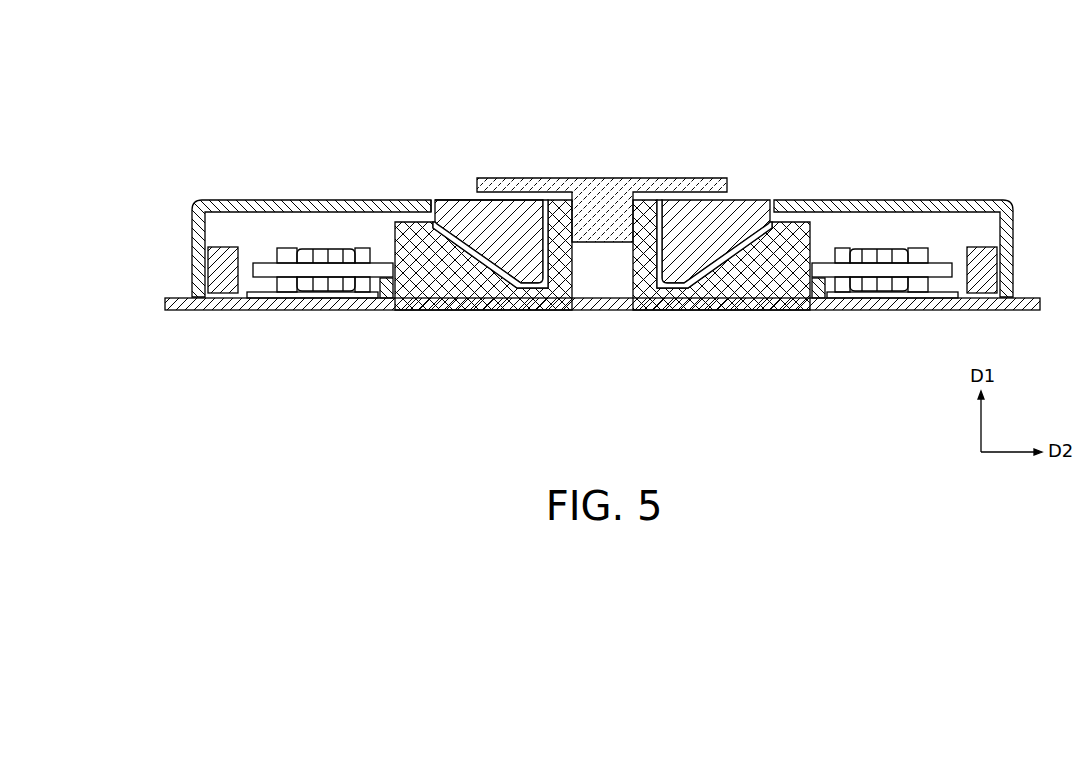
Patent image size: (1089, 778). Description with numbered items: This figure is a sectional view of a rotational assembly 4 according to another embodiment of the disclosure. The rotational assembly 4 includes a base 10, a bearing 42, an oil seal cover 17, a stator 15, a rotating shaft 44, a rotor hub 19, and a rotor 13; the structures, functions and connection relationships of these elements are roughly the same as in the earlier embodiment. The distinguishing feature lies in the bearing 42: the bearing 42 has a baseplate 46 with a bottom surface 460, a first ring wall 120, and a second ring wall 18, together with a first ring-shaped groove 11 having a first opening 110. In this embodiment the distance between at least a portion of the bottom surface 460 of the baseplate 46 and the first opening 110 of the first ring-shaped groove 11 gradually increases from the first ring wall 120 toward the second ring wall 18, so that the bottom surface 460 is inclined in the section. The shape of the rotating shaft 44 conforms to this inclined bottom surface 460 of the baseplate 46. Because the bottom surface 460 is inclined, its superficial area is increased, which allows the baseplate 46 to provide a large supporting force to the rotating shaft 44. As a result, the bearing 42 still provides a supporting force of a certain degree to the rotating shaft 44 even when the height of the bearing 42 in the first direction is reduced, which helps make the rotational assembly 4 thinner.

The rotational assembly 4 is at (198, 61).
The base 10 is at (285, 310).
The first ring-shaped groove 11 is at (466, 206).
The first opening 110 is at (430, 213).
The rotor 13 is at (222, 255).
The stator 15 is at (347, 253).
The oil seal cover 17 is at (598, 210).
The second ring wall 18 is at (422, 310).
The rotor hub 19 is at (368, 208).
The bearing 42 is at (486, 318).
The rotating shaft 44 is at (520, 228).
The baseplate 46 is at (478, 310).
The first ring wall 120 is at (565, 298).
The bottom surface 460 is at (497, 268).